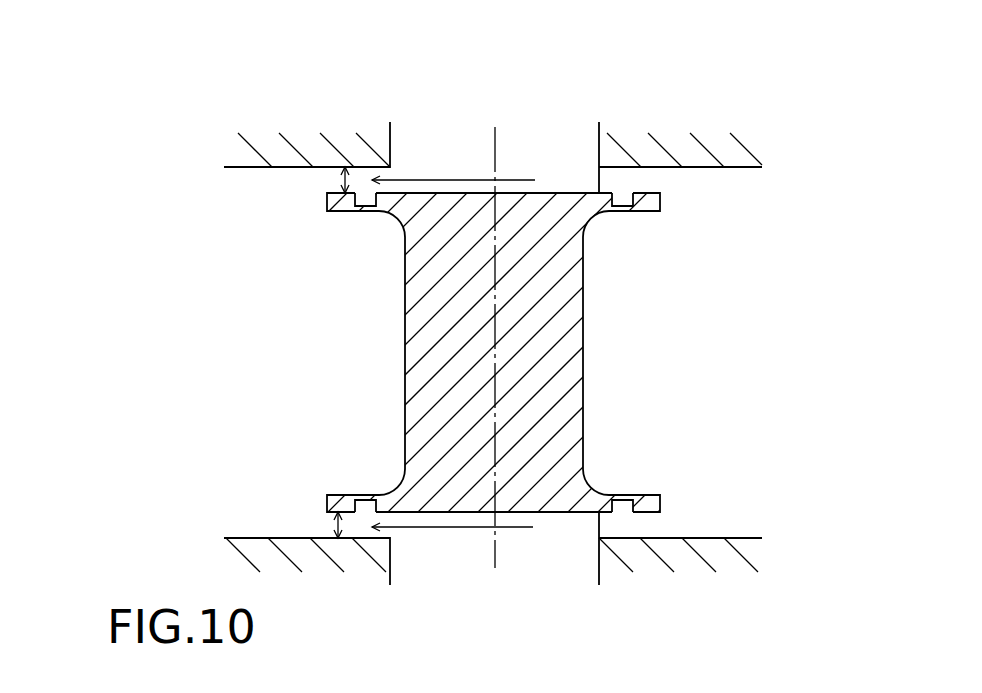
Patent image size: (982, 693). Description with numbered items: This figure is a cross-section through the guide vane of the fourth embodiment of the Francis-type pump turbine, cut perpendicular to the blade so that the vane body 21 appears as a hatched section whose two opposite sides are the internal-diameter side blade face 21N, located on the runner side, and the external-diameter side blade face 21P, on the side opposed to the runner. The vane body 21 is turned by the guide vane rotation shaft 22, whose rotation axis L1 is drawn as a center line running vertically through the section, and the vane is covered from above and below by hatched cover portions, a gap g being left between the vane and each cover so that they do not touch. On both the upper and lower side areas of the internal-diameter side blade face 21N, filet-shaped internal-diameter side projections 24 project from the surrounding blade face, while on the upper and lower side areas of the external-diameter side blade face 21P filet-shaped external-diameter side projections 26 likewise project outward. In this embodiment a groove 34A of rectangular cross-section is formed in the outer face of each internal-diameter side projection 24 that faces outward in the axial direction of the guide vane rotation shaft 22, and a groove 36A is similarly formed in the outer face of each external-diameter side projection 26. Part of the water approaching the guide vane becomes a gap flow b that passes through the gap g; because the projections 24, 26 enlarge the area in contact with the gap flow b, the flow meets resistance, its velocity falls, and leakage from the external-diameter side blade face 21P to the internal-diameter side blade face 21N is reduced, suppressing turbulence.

The vane body 21 is at (586, 356).
The internal-diameter side blade face 21N is at (405, 327).
The external-diameter side blade face 21P is at (583, 298).
The guide vane rotation shaft 22 is at (575, 137).
The internal-diameter side projection 24 is at (335, 205).
The external-diameter side projection 26 is at (657, 203).
The groove 34A is at (365, 200).
The groove 36A is at (623, 200).
The rotation axis L1 is at (496, 134).
The gap g is at (343, 183).
The gap flow b is at (440, 597).